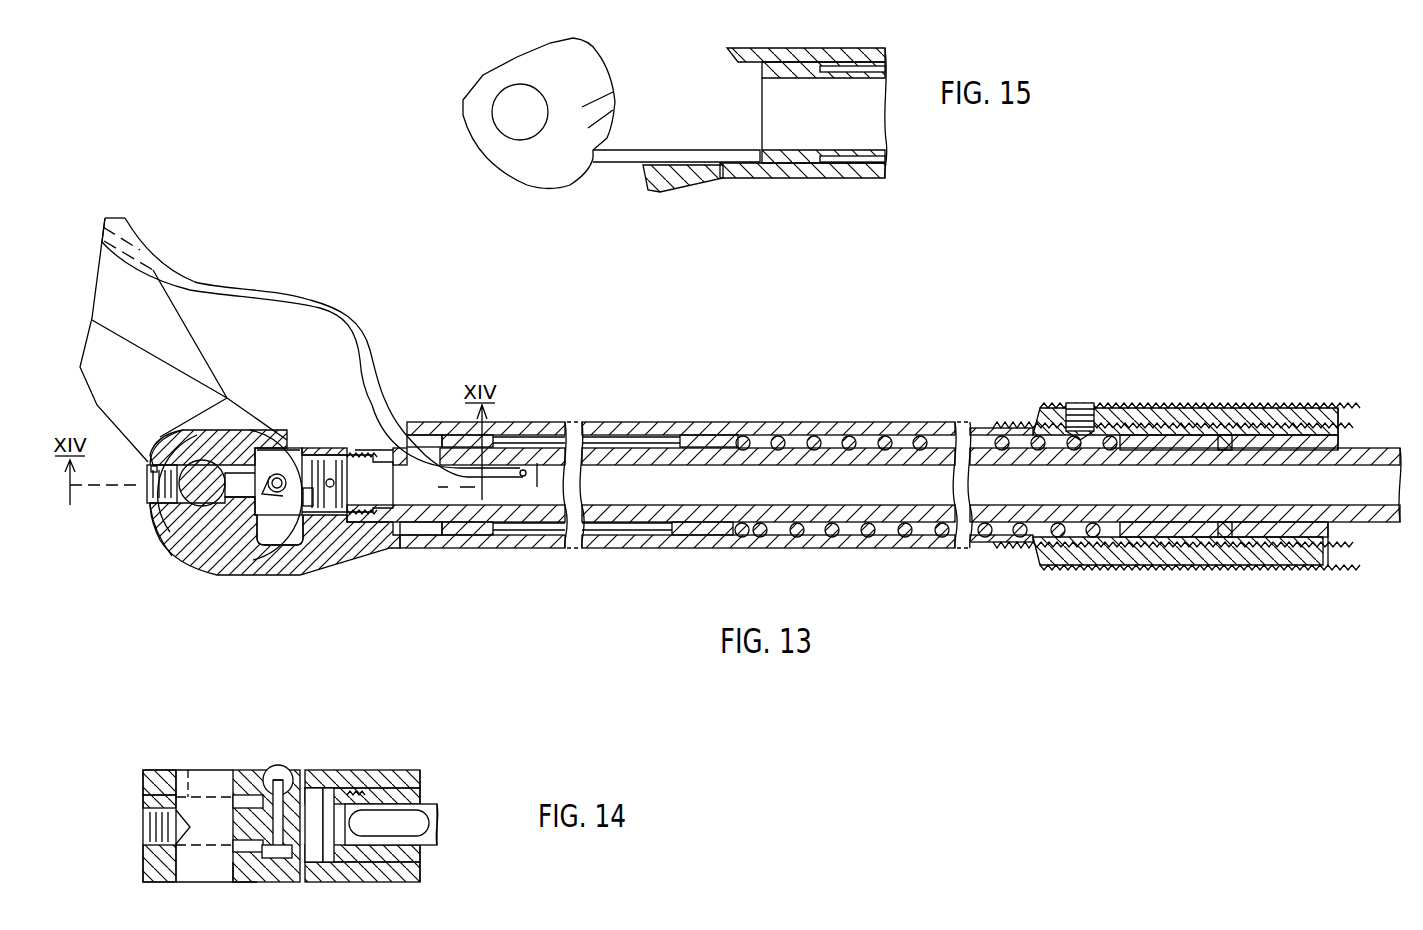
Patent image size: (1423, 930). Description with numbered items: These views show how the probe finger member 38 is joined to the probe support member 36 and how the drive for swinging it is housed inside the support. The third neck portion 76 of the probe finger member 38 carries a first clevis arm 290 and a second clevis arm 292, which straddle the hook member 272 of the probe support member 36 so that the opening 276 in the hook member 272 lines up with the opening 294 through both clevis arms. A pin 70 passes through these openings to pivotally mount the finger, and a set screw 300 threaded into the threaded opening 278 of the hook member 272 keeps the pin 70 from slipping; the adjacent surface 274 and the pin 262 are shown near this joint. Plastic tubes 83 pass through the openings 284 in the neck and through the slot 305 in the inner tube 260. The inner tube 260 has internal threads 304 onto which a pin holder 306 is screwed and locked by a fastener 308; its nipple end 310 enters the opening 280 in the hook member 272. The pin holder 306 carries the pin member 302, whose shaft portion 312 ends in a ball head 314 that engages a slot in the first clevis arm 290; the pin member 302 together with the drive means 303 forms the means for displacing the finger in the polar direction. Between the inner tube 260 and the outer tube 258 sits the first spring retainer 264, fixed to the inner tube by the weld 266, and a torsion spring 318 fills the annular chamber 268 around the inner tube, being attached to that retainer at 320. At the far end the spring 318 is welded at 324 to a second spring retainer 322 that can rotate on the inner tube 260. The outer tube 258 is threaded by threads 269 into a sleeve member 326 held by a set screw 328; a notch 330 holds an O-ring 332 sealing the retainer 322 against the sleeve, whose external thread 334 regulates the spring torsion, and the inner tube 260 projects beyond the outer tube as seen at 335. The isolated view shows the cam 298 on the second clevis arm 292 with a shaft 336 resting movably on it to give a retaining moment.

In FIG. 13, the probe support member 36 is at (608, 590).
In FIG. 13, the probe finger member 38 is at (307, 356).
In FIG. 15, the pin 70 is at (520, 103).
In FIG. 13, the pin 70 is at (195, 505).
In FIG. 13, the third neck portion 76 is at (168, 313).
In FIG. 13, the plastic tubes 83 is at (172, 265).
In FIG. 15, the outer tube 258 is at (800, 50).
In FIG. 13, the outer tube 258 is at (515, 543).
In FIG. 14, the outer tube 258 is at (395, 770).
In FIG. 13, the inner tube 260 is at (478, 517).
In FIG. 14, the inner tube 260 is at (433, 803).
In FIG. 13, the pin 262 is at (558, 421).
In FIG. 15, the first spring retainer 264 is at (882, 150).
In FIG. 13, the first spring retainer 264 is at (455, 532).
In FIG. 13, the weld 266 is at (416, 440).
In FIG. 13, the annular chamber 268 is at (797, 447).
In FIG. 13, the threads 269 is at (1018, 422).
In FIG. 13, the hook member 272 is at (195, 437).
In FIG. 14, the hook member 272 is at (145, 855).
In FIG. 13, the housing lower portion 274 is at (170, 540).
In FIG. 14, the opening 276 is at (175, 775).
In FIG. 13, the threaded opening 278 is at (150, 465).
In FIG. 13, the opening 280 is at (258, 532).
In FIG. 14, the opening 280 is at (240, 870).
In FIG. 13, the openings 284 is at (125, 220).
In FIG. 14, the first clevis arm 290 is at (260, 770).
In FIG. 15, the second clevis arm 292 is at (593, 45).
In FIG. 13, the second clevis arm 292 is at (233, 405).
In FIG. 14, the second clevis arm 292 is at (160, 870).
In FIG. 14, the opening 294 is at (185, 775).
In FIG. 15, the cam 298 is at (620, 112).
In FIG. 13, the set screw 300 is at (147, 487).
In FIG. 14, the set screw 300 is at (150, 820).
In FIG. 13, the pin member 302 is at (293, 447).
In FIG. 13, the drive means 303 is at (352, 502).
In FIG. 13, the threads 304 is at (367, 452).
In FIG. 14, the threads 304 is at (355, 866).
In FIG. 13, the slot 305 is at (398, 420).
In FIG. 14, the slot 305 is at (445, 825).
In FIG. 13, the pin holder 306 is at (313, 500).
In FIG. 14, the pin holder 306 is at (320, 795).
In FIG. 13, the fastener 308 is at (331, 470).
In FIG. 14, the fastener 308 is at (330, 800).
In FIG. 13, the nipple end 310 is at (270, 448).
In FIG. 14, the nipple end 310 is at (232, 800).
In FIG. 13, the shaft portion 312 is at (280, 494).
In FIG. 14, the shaft portion 312 is at (282, 860).
In FIG. 14, the ball head 314 is at (280, 776).
In FIG. 13, the torsion spring 318 is at (797, 537).
In FIG. 13, the attachment of torsion spring 320 is at (742, 537).
In FIG. 13, the second spring retainer 322 is at (1152, 440).
In FIG. 13, the weld 324 is at (1118, 560).
In FIG. 13, the sleeve member 326 is at (1335, 415).
In FIG. 13, the set screw 328 is at (1080, 403).
In FIG. 13, the notch 330 is at (1225, 435).
In FIG. 13, the O-ring 332 is at (1225, 553).
In FIG. 13, the thread 334 is at (1272, 407).
In FIG. 13, the axial extension of inner tube 335 is at (1352, 573).
In FIG. 15, the shaft 336 is at (630, 150).